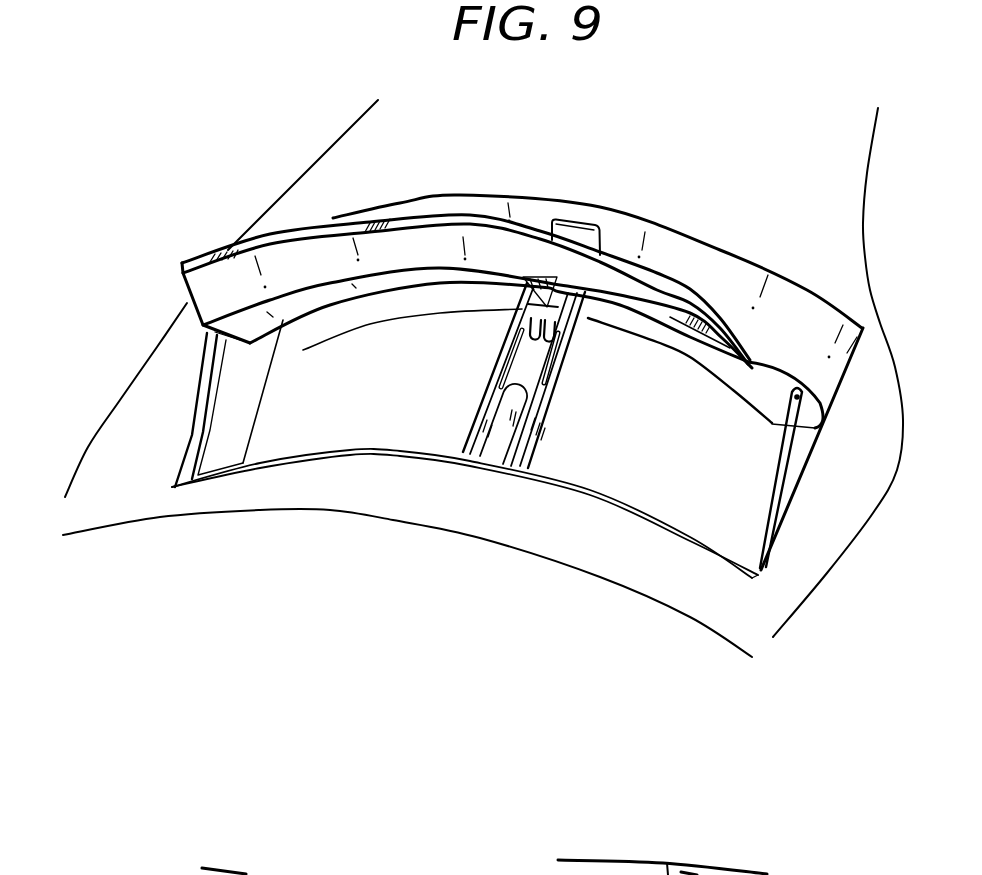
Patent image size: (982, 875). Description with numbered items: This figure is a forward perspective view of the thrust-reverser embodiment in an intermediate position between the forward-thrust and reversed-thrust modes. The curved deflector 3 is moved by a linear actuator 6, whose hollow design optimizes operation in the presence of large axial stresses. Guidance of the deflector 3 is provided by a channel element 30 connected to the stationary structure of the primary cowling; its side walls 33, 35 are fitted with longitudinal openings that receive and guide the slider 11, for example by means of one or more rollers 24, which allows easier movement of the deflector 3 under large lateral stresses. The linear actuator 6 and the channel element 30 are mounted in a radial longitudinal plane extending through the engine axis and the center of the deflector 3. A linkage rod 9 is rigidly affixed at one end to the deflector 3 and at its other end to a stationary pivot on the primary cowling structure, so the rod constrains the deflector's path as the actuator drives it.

The deflector 3 is at (707, 316).
The channel element 30 is at (588, 233).
The linkage rod 9 is at (205, 375).
The linear actuator 6 is at (493, 457).
The roller 24 is at (576, 323).
The side wall 33 is at (490, 392).
The side wall 35 is at (546, 410).
The slider 11 is at (528, 307).